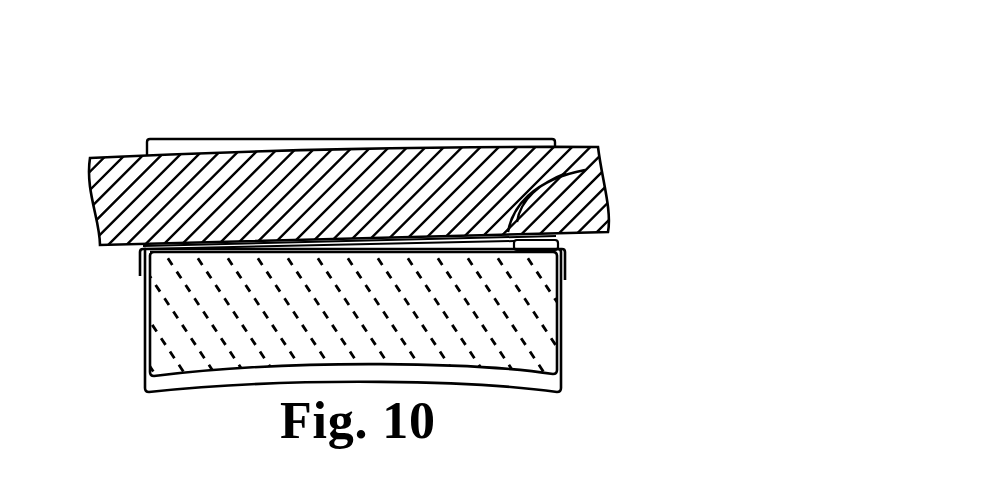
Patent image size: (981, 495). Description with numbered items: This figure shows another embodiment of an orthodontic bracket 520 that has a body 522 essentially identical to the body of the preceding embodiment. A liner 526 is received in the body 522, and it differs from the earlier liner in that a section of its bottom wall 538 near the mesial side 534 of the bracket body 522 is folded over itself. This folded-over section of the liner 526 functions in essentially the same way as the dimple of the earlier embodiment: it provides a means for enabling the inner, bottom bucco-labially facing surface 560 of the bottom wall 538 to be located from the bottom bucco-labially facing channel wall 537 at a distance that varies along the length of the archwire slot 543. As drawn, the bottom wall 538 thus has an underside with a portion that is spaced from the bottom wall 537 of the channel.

The bracket 520 is at (585, 313).
The body 522 is at (575, 400).
The liner 526 is at (126, 266).
The mesial side 534 is at (561, 349).
The bottom bucco-labially facing channel wall 537 is at (481, 253).
The bottom wall 538 is at (558, 237).
The archwire slot 543 is at (175, 143).
The inner, bottom bucco-labially facing surface 560 is at (585, 170).